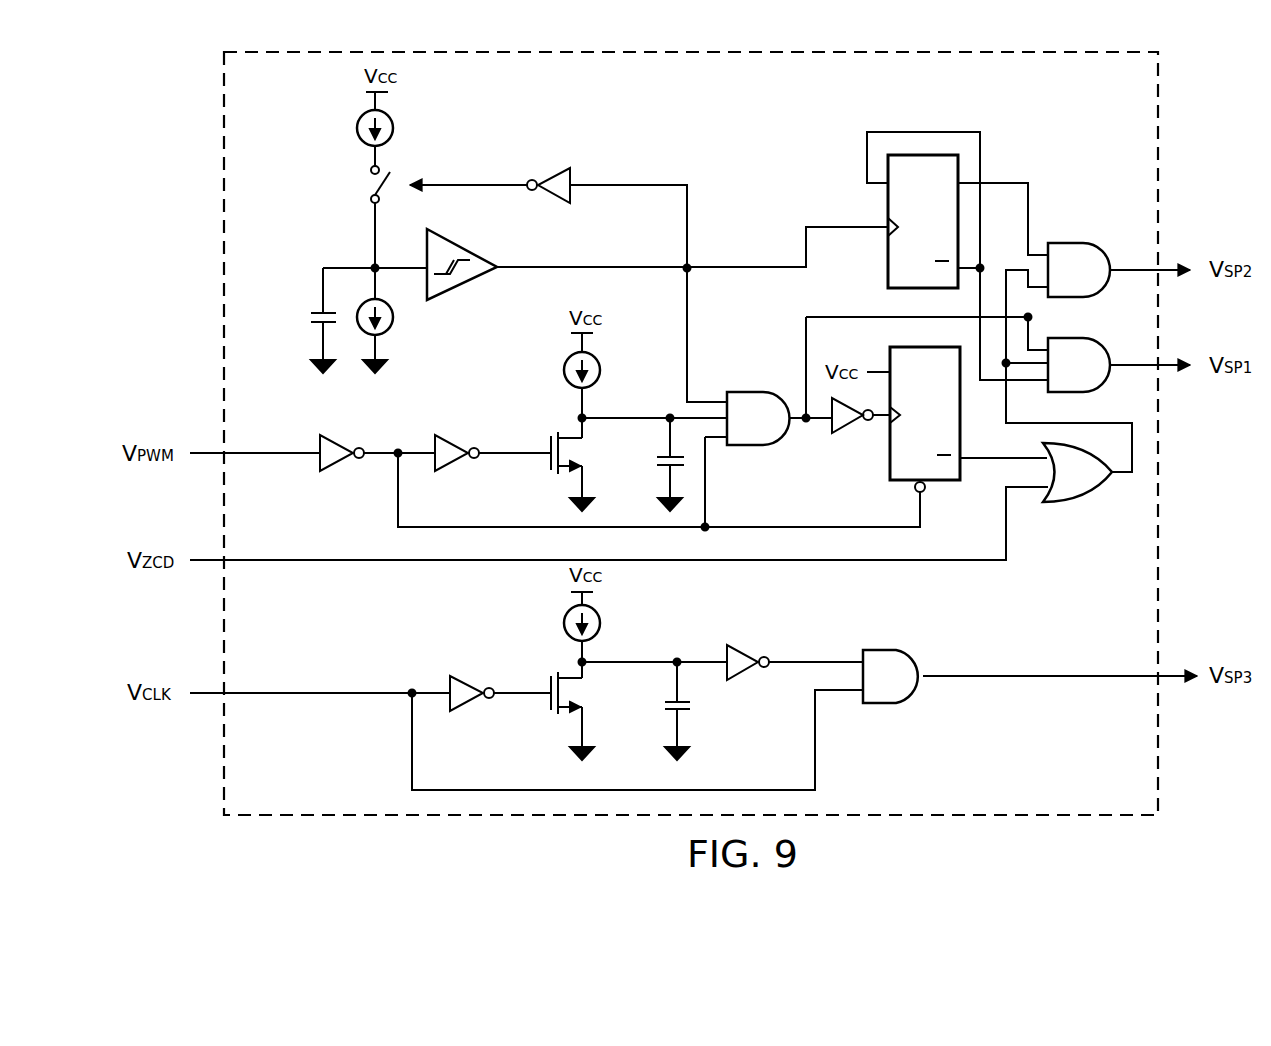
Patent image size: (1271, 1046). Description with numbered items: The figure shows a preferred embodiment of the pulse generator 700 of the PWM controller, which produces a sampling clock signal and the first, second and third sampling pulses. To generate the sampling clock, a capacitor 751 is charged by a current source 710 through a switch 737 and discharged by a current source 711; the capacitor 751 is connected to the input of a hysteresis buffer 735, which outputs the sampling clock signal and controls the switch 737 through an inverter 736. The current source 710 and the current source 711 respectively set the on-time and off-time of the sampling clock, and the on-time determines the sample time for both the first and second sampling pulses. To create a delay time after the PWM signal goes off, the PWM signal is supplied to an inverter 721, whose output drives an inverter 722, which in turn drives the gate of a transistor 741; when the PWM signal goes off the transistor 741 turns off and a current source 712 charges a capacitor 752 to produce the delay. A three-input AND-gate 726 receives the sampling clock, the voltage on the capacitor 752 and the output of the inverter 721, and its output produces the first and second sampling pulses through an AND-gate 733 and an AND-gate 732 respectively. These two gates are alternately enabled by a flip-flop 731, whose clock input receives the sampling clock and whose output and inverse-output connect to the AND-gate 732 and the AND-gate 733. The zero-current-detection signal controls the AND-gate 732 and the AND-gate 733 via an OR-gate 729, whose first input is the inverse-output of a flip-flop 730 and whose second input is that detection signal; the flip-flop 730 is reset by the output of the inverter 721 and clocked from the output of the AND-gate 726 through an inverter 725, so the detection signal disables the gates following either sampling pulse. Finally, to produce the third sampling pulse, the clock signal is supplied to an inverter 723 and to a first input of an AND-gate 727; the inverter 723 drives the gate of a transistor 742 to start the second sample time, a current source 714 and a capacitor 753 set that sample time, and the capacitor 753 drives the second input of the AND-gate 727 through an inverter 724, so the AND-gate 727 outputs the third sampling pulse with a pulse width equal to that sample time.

The pulse generator 700 is at (1158, 116).
The current source 710 is at (357, 129).
The current source 711 is at (398, 320).
The current source 712 is at (562, 360).
The current source 714 is at (604, 621).
The inverter 721 is at (343, 470).
The inverter 722 is at (458, 470).
The inverter 723 is at (466, 713).
The inverter 724 is at (742, 681).
The inverter 725 is at (846, 435).
The AND-gate 726 is at (757, 390).
The AND-gate 727 is at (897, 707).
The OR-gate 729 is at (1076, 503).
The flip-flop 730 is at (950, 482).
The flip-flop 731 is at (880, 270).
The AND-gate 732 is at (1090, 240).
The AND-gate 733 is at (1090, 336).
The hysteresis buffer 735 is at (483, 251).
The inverter 736 is at (557, 165).
The switch 737 is at (358, 196).
The transistor 741 is at (545, 437).
The transistor 742 is at (546, 679).
The capacitor 751 is at (308, 323).
The capacitor 752 is at (651, 459).
The capacitor 753 is at (659, 709).